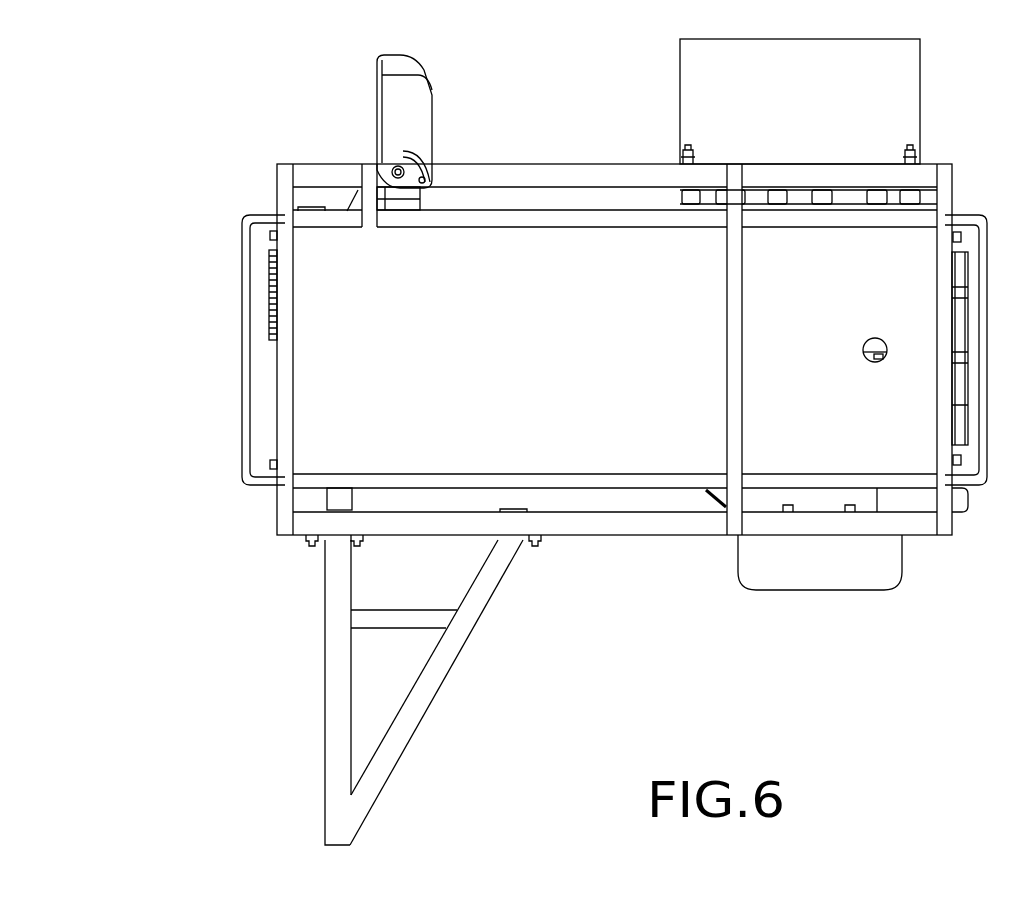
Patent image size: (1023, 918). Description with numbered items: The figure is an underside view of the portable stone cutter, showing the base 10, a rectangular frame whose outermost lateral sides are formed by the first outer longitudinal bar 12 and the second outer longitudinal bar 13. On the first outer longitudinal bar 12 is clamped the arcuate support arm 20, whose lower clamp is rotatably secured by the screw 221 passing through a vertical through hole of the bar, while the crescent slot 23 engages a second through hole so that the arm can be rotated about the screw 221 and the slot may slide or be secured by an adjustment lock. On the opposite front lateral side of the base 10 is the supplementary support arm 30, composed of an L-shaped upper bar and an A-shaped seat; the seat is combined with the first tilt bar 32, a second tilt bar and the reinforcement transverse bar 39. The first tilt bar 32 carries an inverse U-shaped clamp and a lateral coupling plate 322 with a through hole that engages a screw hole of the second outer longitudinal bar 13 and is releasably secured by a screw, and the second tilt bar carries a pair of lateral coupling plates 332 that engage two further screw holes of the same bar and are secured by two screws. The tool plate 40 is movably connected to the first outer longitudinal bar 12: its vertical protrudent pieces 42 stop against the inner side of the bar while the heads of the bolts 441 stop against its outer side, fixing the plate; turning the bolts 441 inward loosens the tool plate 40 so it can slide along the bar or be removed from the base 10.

The base 10 is at (218, 352).
The first outer longitudinal bar 12 is at (604, 170).
The second outer longitudinal bar 13 is at (680, 528).
The arcuate support arm 20 is at (412, 117).
The screw 221 is at (394, 167).
The crescent slot 23 is at (425, 153).
The supplementary support arm 30 is at (372, 692).
The first tilt bar 32 is at (428, 693).
The reinforcement transverse bar 39 is at (413, 620).
The tool plate 40 is at (905, 82).
The vertical protrudent pieces 42 is at (845, 188).
The bolts 441 is at (692, 166).
The lateral coupling plate 322 is at (540, 540).
The lateral coupling plates 332 is at (365, 545).